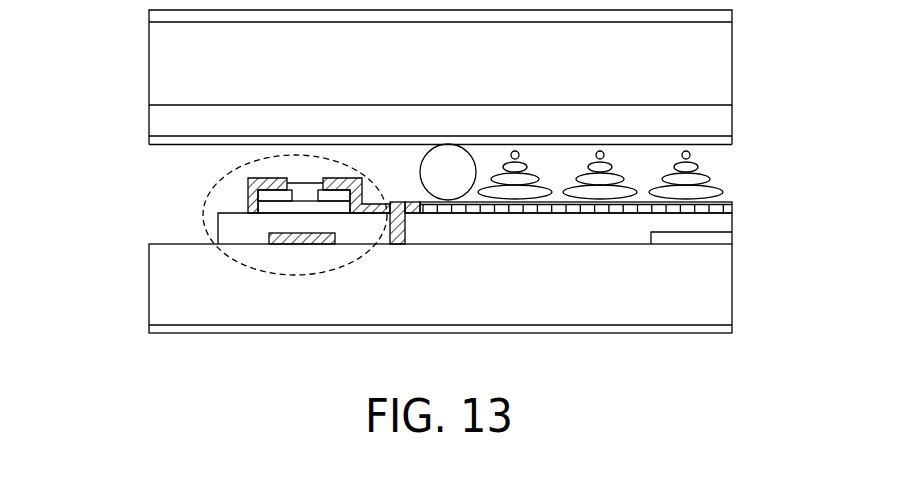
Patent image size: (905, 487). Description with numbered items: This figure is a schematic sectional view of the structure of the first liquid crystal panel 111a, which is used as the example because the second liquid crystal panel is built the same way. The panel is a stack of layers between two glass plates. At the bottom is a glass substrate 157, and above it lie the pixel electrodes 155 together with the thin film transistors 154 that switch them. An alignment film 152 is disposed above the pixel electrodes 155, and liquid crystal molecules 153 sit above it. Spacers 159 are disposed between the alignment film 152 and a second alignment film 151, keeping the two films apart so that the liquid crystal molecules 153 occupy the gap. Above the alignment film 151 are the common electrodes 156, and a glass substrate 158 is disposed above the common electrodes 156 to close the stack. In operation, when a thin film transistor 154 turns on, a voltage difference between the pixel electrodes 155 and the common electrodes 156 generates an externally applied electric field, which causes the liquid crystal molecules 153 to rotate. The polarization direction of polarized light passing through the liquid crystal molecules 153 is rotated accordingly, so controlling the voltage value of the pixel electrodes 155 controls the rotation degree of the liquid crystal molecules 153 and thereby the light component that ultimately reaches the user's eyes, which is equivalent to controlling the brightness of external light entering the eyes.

The first liquid crystal panel 111a is at (97, 31).
The alignment film 151 is at (722, 140).
The alignment film 152 is at (720, 208).
The liquid crystal molecules 153 is at (693, 178).
The thin film transistor 154 is at (295, 276).
The pixel electrodes 155 is at (717, 223).
The common electrodes 156 is at (708, 120).
The glass substrate 157 is at (708, 287).
The glass substrate 158 is at (708, 67).
The spacers 159 is at (457, 190).